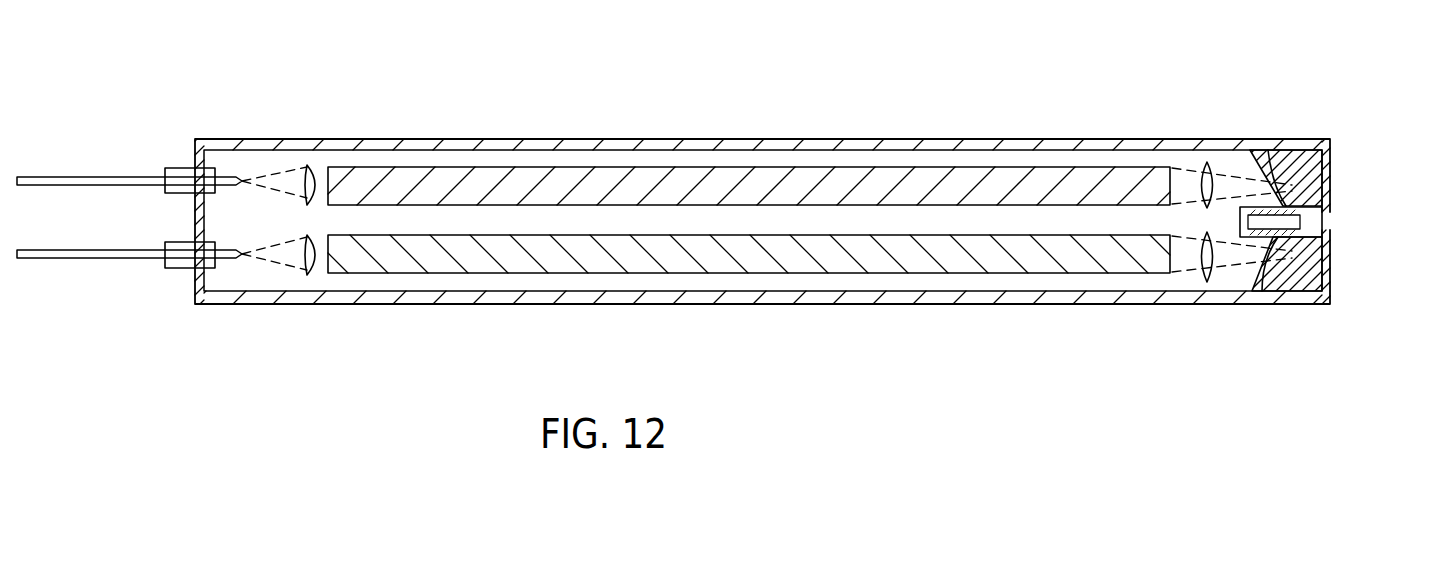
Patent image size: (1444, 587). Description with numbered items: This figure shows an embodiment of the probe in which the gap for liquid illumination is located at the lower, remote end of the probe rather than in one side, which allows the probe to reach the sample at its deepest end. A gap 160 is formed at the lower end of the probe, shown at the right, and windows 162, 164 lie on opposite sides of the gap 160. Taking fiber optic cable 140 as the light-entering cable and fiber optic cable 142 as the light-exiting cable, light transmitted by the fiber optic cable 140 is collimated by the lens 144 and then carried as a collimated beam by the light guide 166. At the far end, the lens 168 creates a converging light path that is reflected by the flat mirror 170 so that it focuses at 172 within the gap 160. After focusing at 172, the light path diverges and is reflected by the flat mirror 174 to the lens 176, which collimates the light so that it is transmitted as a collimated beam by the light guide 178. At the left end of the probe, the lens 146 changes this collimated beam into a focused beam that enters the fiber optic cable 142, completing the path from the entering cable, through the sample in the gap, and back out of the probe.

The fiber optic cable 140 is at (123, 177).
The fiber optic cable 142 is at (75, 260).
The lens 144 is at (318, 170).
The lens 146 is at (318, 268).
The gap 160 is at (1302, 222).
The window 162 is at (1295, 186).
The window 164 is at (1298, 243).
The light guide 166 is at (908, 185).
The lens 168 is at (1205, 182).
The flat mirror 170 is at (1330, 147).
The focus point 172 is at (1243, 218).
The flat mirror 174 is at (1283, 250).
The lens 176 is at (1197, 276).
The light guide 178 is at (797, 258).